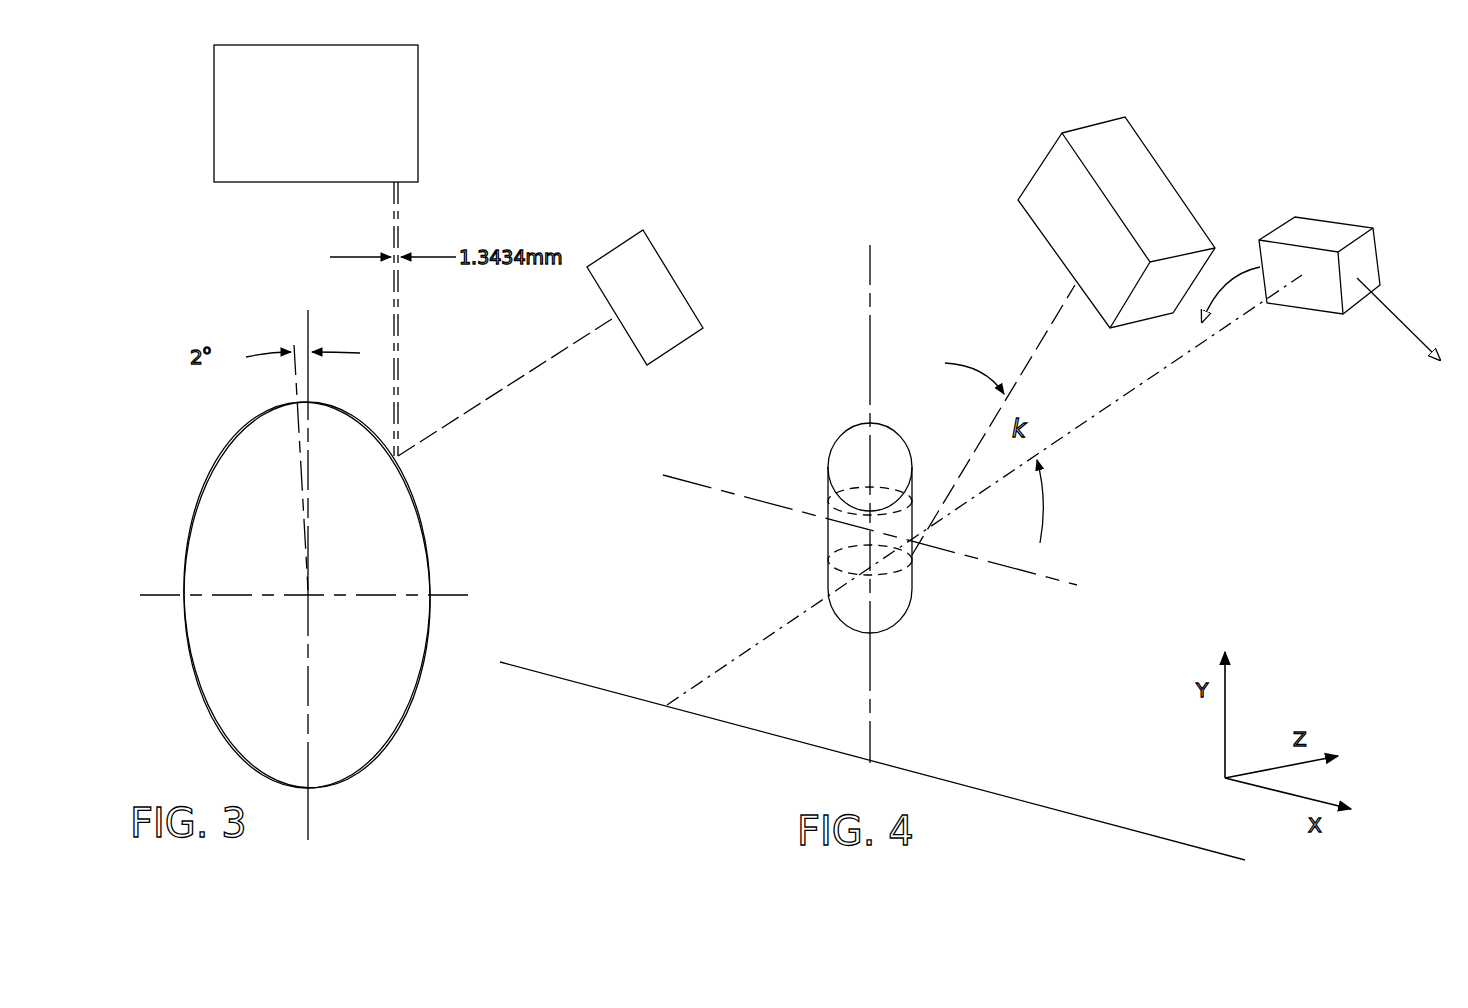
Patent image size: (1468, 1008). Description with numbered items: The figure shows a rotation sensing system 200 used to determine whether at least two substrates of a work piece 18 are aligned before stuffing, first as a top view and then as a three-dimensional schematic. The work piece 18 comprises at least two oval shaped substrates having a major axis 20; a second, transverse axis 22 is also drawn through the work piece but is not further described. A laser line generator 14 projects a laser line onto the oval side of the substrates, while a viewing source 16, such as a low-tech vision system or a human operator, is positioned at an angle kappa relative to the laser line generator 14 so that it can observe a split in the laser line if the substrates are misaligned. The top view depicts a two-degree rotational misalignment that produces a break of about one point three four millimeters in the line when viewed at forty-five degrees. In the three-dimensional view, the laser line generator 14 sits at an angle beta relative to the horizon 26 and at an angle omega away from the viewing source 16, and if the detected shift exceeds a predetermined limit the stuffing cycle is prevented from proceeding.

In FIG. 3, the rotation sensing system 200 is at (170, 188).
In FIG. 4, the rotation sensing system 200 is at (820, 213).
In FIG. 3, the viewing source 16 is at (325, 113).
In FIG. 4, the viewing source 16 is at (1130, 158).
In FIG. 3, the laser line generator 14 is at (656, 309).
In FIG. 4, the laser line generator 14 is at (1340, 232).
In FIG. 3, the work piece 18 is at (222, 442).
In FIG. 4, the work piece 18 is at (848, 455).
In FIG. 3, the major axis 20 is at (302, 322).
In FIG. 4, the major axis 20 is at (868, 340).
In FIG. 3, the transverse axis 22 is at (158, 592).
In FIG. 4, the transverse axis 22 is at (718, 493).
In FIG. 4, the horizon 26 is at (1090, 817).